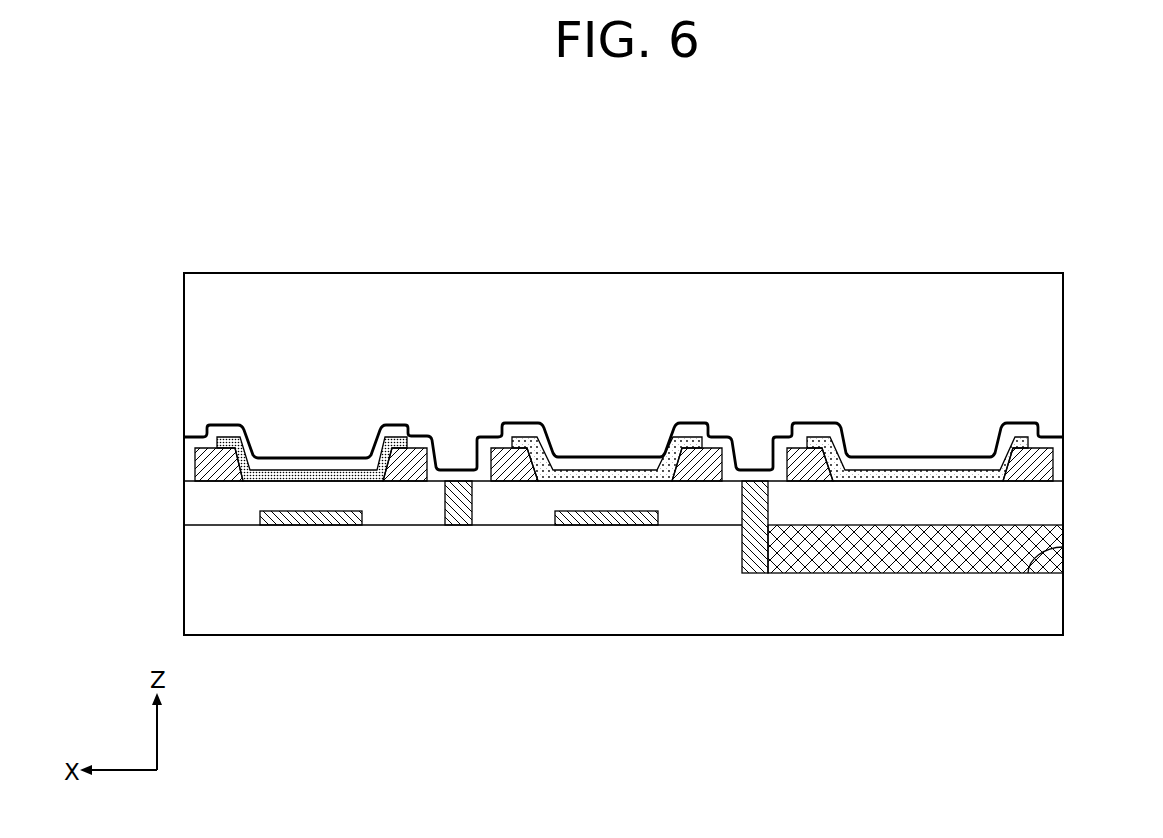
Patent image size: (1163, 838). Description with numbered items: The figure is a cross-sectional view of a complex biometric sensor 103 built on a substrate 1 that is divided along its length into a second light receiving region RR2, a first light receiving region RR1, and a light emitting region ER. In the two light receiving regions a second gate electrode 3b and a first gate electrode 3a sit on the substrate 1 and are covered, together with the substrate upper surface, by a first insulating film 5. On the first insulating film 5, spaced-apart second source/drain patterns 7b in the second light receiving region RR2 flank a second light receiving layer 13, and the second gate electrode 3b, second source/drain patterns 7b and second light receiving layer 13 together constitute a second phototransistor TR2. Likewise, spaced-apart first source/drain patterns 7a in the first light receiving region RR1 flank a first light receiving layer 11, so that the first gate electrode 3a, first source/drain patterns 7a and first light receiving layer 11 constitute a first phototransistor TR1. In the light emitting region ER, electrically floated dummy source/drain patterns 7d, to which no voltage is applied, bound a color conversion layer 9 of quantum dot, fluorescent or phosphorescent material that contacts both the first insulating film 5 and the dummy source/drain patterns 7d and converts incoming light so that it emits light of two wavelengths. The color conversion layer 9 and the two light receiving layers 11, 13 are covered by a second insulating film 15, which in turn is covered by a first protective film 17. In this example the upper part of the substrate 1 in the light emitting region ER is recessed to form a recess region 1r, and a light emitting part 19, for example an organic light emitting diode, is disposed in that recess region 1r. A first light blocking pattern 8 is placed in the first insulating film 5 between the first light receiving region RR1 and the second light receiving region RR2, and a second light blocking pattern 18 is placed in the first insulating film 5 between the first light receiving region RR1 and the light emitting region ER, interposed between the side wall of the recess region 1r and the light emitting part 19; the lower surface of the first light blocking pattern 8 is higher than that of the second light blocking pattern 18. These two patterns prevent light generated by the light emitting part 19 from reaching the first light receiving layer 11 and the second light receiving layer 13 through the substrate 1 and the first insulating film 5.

The complex biometric sensor 103 is at (1012, 222).
The substrate 1 is at (1055, 594).
The recess region 1r is at (1055, 556).
The first gate electrode 3a is at (640, 527).
The second gate electrode 3b is at (342, 527).
The first insulating film 5 is at (1055, 496).
The first source/drain patterns 7a is at (509, 455).
The second source/drain patterns 7b is at (208, 455).
The dummy source/drain patterns 7d is at (798, 455).
The first light blocking pattern 8 is at (453, 490).
The color conversion layer 9 is at (913, 472).
The first light receiving layer 11 is at (603, 472).
The second light receiving layer 13 is at (310, 470).
The second insulating film 15 is at (1055, 436).
The first protective film 17 is at (1055, 347).
The second light blocking pattern 18 is at (755, 488).
The light emitting part 19 is at (1055, 527).
The first phototransistor TR1 is at (586, 540).
The second phototransistor TR2 is at (285, 540).
The first light receiving region RR1 is at (477, 638).
The second light receiving region RR2 is at (182, 638).
The light emitting region ER is at (767, 638).